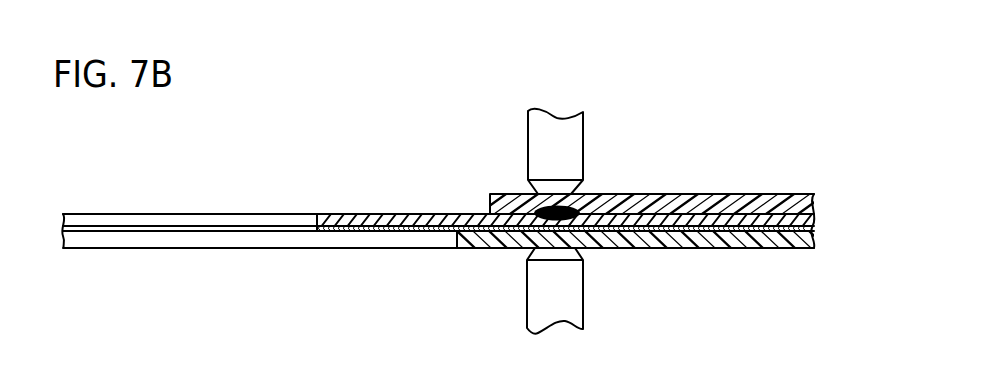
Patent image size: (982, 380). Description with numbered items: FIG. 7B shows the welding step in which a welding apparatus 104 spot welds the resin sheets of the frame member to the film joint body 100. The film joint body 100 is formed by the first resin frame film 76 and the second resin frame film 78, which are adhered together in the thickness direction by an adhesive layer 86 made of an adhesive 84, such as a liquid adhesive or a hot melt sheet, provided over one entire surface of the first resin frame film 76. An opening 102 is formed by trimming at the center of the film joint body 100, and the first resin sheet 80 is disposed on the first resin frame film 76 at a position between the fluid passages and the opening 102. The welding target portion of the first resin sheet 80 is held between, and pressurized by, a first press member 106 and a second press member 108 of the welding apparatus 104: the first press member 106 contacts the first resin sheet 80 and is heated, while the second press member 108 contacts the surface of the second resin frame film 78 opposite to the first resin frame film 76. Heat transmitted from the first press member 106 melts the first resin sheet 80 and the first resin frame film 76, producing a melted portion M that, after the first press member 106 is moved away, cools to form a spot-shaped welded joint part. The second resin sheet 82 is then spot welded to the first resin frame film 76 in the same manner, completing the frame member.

The film joint body 100 is at (468, 250).
The opening 102 is at (241, 222).
The welding apparatus 104 is at (586, 190).
The first press member 106 is at (572, 142).
The second press member 108 is at (572, 292).
The first resin frame film 76 is at (705, 219).
The second resin frame film 78 is at (748, 238).
The first resin sheet 80 is at (748, 202).
The second resin sheet 82 is at (676, 177).
The adhesive 84 is at (562, 293).
The adhesive layer 86 is at (678, 229).
The melted portion M is at (560, 205).